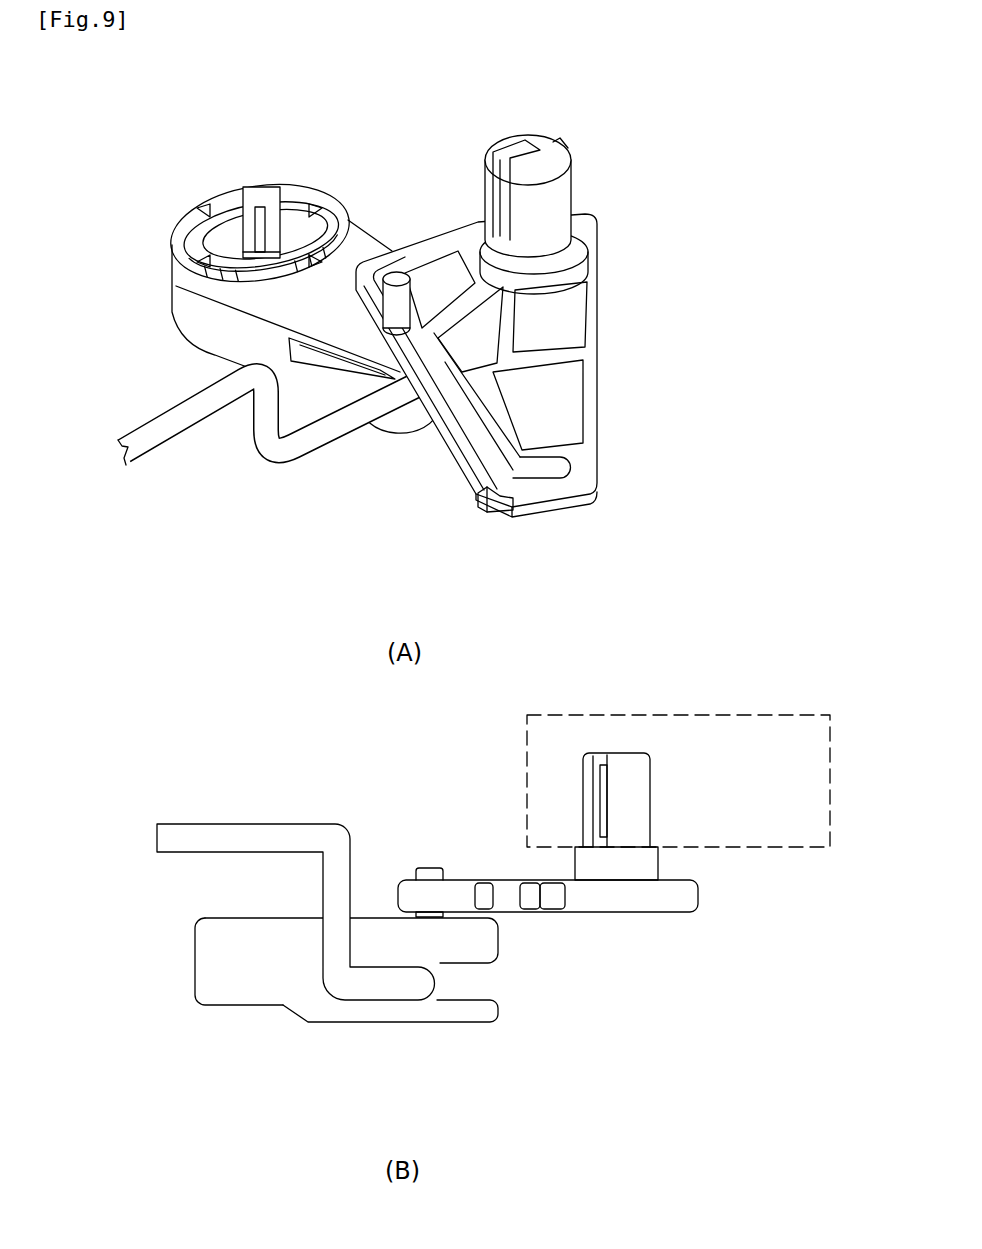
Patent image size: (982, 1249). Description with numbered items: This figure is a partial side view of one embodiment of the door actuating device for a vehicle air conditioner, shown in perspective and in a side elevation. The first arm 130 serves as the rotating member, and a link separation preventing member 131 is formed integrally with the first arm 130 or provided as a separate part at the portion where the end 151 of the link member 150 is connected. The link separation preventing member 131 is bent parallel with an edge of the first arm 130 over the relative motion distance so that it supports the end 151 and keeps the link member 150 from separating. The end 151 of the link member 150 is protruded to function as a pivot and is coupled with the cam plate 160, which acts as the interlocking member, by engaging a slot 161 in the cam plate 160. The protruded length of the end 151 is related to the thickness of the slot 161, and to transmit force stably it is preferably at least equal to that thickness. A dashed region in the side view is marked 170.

The first arm 130 is at (197, 312).
The link separation preventing member 131 is at (398, 425).
The link member 150 is at (178, 414).
The end of the link member 151 is at (394, 271).
The cam plate 160 is at (588, 246).
The slot 161 is at (522, 482).
The cylindrical boss 170 is at (600, 715).